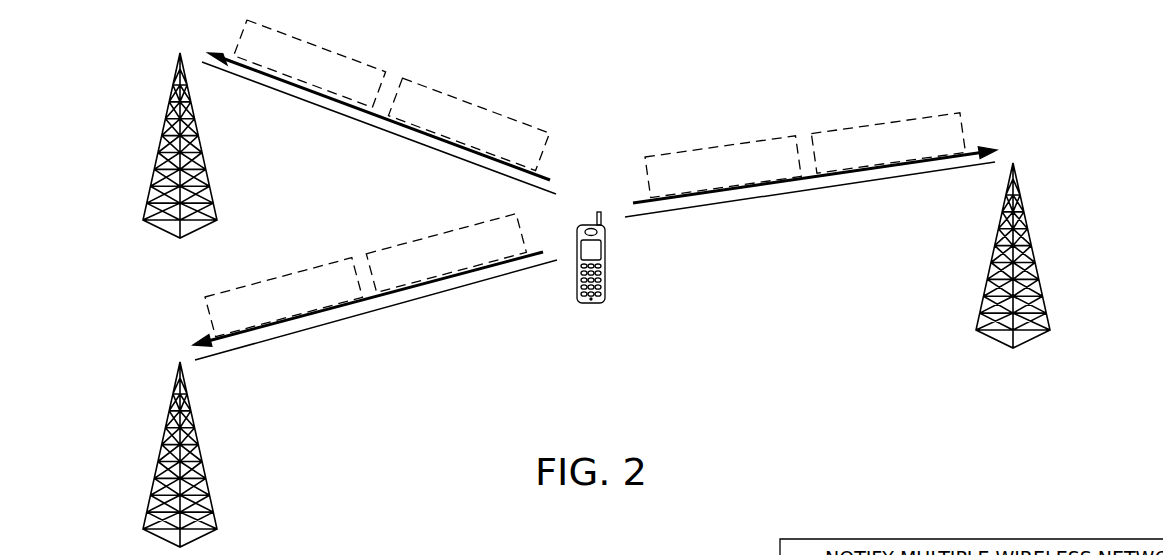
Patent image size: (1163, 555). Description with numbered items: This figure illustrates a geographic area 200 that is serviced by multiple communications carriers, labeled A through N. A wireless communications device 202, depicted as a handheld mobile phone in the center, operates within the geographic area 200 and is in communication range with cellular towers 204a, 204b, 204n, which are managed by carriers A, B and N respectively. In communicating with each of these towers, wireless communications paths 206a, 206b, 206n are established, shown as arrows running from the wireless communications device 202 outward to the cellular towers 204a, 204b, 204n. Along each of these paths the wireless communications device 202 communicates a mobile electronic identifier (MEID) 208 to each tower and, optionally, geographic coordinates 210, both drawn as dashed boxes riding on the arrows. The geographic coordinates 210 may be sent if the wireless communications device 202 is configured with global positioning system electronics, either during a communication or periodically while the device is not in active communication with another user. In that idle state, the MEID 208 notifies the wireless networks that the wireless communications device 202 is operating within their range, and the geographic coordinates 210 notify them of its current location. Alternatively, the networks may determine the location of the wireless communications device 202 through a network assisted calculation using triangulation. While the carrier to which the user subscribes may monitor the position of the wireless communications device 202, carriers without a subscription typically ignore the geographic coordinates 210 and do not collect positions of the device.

The geographic area 200 is at (754, 374).
The wireless communications device 202 is at (607, 278).
The cellular tower 204a is at (165, 128).
The cellular tower 204b is at (165, 440).
The cellular tower 204n is at (1032, 242).
The wireless communications path 206a is at (345, 117).
The wireless communications path 206b is at (347, 318).
The wireless communications path 206n is at (836, 187).
The mobile electronic identifier (MEID) 208 is at (333, 50).
The geographic coordinates 210 is at (490, 108).